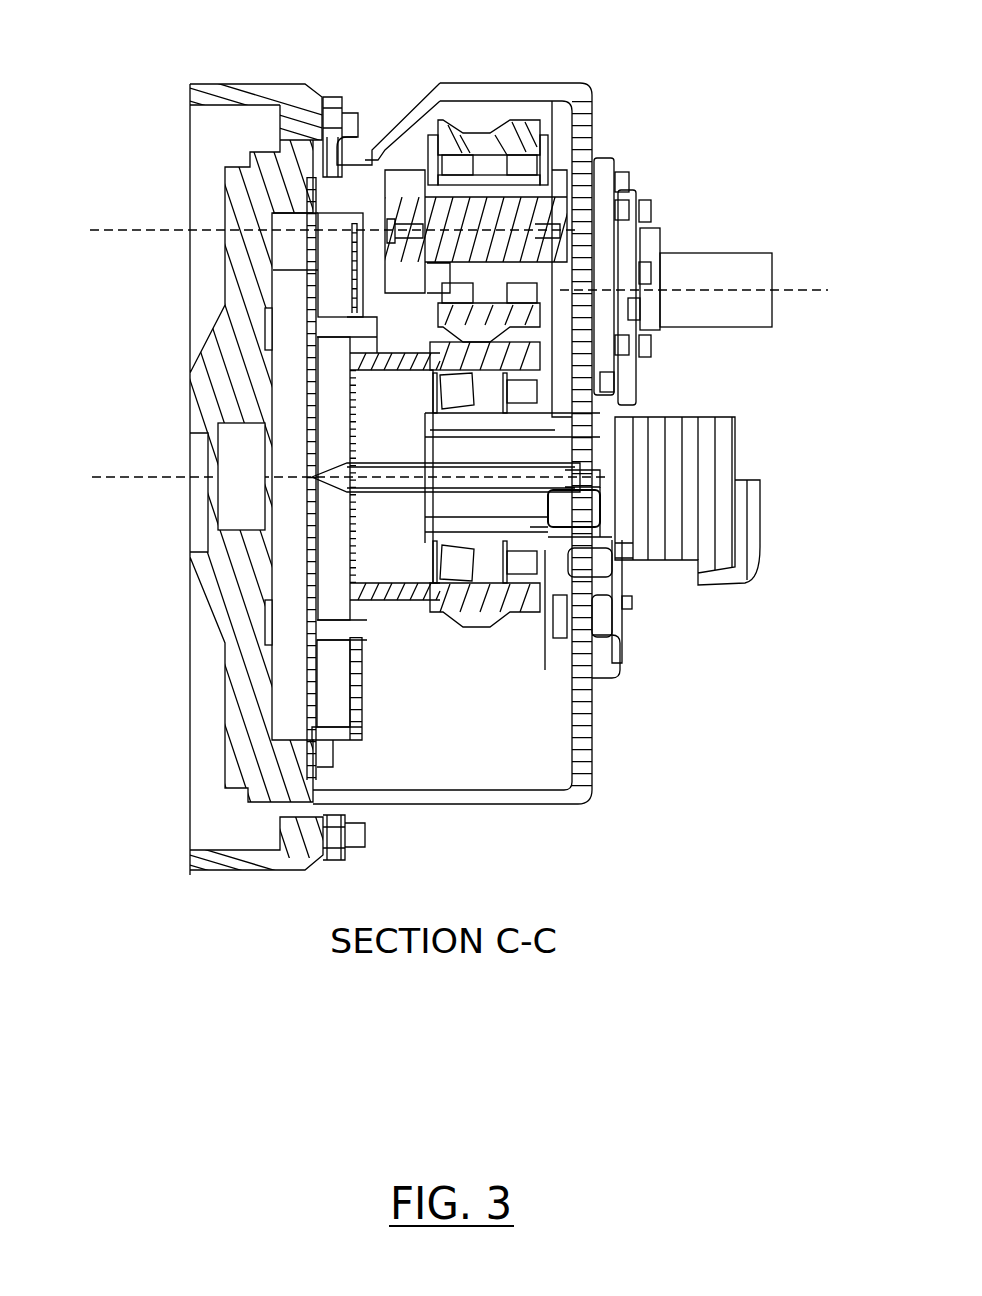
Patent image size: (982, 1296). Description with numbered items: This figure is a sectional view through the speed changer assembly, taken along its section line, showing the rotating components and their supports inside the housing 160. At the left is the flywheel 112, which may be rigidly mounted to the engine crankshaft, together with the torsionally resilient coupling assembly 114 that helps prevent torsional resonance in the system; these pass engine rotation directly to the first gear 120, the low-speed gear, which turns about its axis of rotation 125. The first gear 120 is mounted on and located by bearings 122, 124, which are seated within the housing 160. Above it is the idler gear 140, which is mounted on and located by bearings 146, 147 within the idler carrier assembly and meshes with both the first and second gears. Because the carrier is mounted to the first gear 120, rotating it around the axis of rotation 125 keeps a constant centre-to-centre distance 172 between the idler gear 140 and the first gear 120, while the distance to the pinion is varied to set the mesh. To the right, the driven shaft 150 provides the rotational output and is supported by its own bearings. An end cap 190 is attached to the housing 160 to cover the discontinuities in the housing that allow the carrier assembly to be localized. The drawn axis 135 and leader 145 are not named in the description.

The flywheel 112 is at (265, 160).
The torsionally resilient coupling assembly 114 is at (342, 220).
The first gear 120 is at (518, 603).
The bearing 122 is at (455, 563).
The bearing 124 is at (523, 567).
The axis of rotation 125 is at (147, 478).
The motor axis 135 is at (800, 290).
The idler gear 140 is at (533, 140).
The shaft axis 145 is at (147, 230).
The bearing 146 is at (453, 158).
The bearing 147 is at (522, 160).
The driven shaft 150 is at (703, 252).
The housing 160 is at (583, 742).
The centre-to-centre distance 172 is at (90, 226).
The end cap 190 is at (740, 507).